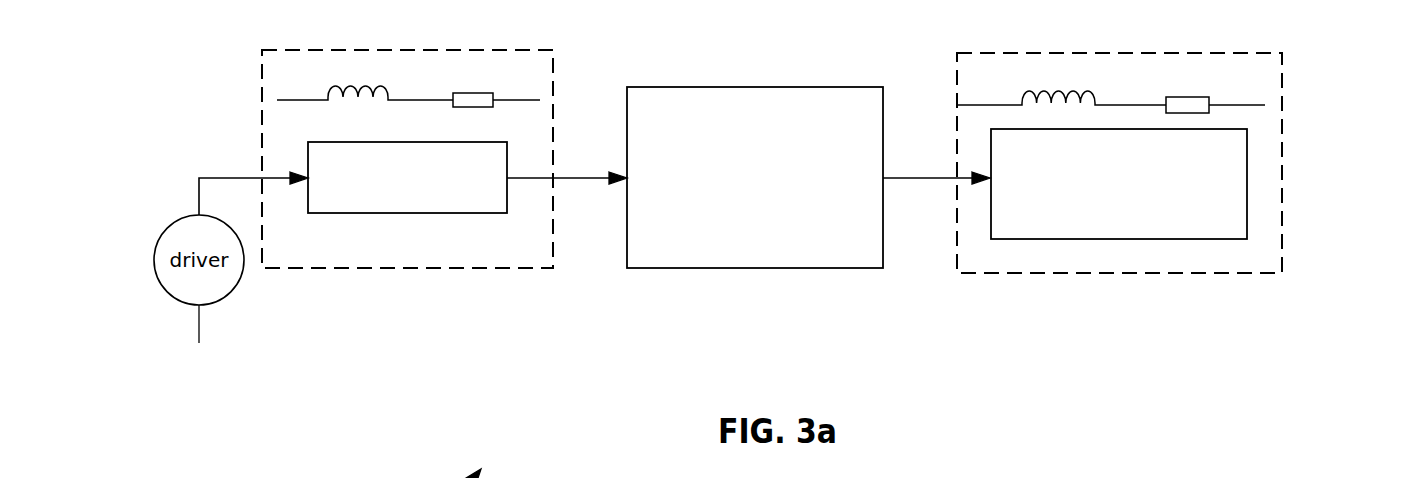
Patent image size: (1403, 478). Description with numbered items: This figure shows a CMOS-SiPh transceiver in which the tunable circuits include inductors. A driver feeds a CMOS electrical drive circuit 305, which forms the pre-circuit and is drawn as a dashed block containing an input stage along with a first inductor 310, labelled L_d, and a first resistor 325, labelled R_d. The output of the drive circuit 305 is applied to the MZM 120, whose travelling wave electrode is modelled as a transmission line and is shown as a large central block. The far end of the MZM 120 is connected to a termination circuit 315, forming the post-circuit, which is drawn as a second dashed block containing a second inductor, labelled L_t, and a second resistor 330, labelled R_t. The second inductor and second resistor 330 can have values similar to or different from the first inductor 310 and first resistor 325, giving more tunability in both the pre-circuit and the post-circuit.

The CMOS electrical drive circuit 305 is at (388, 268).
The first inductor 310 is at (1028, 95).
The first resistor 325 is at (455, 93).
The MZM 120 is at (642, 268).
The termination circuit 315 is at (1125, 273).
The second resistor 330 is at (1195, 97).